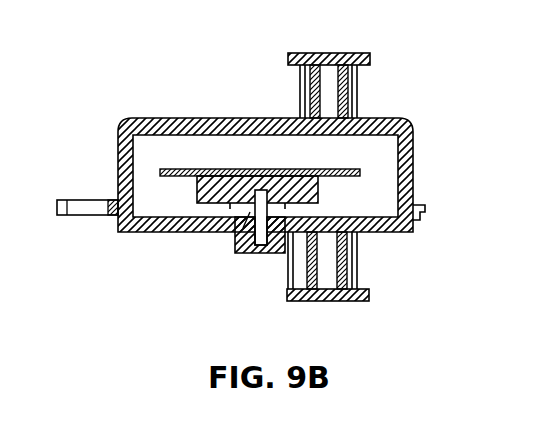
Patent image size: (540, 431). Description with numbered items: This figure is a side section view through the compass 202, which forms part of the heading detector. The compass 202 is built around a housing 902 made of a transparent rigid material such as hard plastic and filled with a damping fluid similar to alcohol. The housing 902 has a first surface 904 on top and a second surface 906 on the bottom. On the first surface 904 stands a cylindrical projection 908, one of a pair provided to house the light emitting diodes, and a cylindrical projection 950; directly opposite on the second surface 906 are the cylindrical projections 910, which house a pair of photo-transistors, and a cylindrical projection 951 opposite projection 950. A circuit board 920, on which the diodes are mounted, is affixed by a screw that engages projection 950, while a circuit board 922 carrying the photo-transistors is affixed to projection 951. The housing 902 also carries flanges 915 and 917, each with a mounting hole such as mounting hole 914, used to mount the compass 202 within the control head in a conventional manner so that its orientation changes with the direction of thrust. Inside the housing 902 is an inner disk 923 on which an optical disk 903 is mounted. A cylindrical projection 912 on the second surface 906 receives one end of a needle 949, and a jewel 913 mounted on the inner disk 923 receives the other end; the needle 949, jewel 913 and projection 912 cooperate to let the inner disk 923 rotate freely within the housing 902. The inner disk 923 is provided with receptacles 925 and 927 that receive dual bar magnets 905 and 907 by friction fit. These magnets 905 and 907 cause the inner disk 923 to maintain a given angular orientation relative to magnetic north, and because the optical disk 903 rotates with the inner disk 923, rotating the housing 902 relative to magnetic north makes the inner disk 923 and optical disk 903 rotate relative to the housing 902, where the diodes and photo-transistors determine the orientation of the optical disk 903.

The compass 202 is at (124, 94).
The housing 902 is at (118, 161).
The optical disk 903 is at (372, 162).
The first surface 904 is at (183, 117).
The dual bar magnet 905 is at (230, 229).
The second surface 906 is at (150, 233).
The dual bar magnet 907 is at (262, 248).
The cylindrical projection 908 is at (350, 110).
The cylindrical projections 910 is at (357, 283).
The cylindrical projection 912 is at (250, 256).
The jewel 913 is at (268, 176).
The mounting hole 914 is at (97, 200).
The flange 915 is at (62, 216).
The flange 917 is at (426, 207).
The circuit board 920 is at (368, 53).
The circuit board 922 is at (366, 301).
The inner disk 923 is at (320, 186).
The receptacle 925 is at (222, 172).
The receptacle 927 is at (296, 176).
The needle 949 is at (243, 228).
The cylindrical projection 950 is at (350, 86).
The cylindrical projection 951 is at (345, 274).